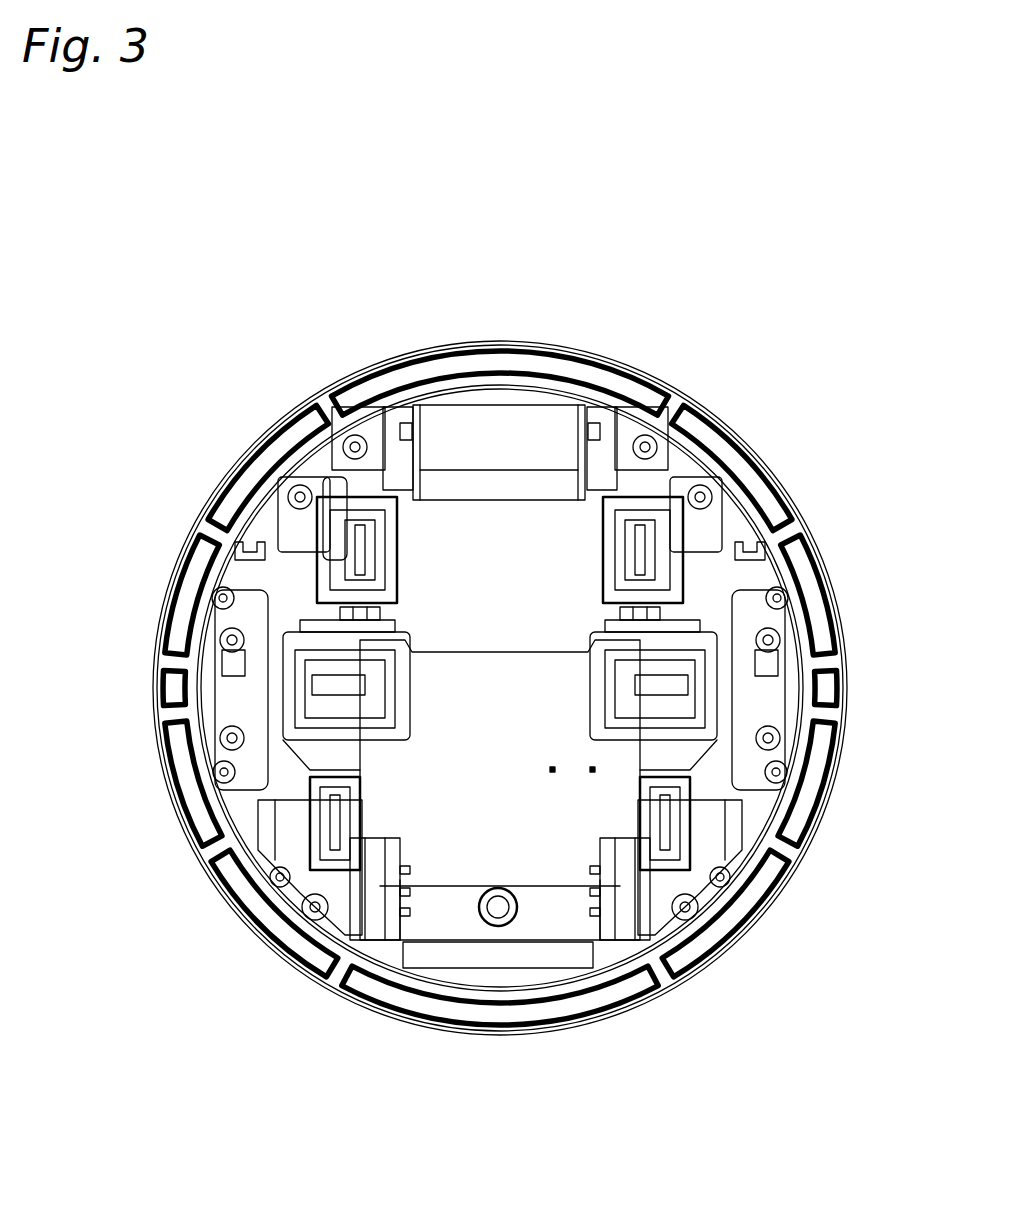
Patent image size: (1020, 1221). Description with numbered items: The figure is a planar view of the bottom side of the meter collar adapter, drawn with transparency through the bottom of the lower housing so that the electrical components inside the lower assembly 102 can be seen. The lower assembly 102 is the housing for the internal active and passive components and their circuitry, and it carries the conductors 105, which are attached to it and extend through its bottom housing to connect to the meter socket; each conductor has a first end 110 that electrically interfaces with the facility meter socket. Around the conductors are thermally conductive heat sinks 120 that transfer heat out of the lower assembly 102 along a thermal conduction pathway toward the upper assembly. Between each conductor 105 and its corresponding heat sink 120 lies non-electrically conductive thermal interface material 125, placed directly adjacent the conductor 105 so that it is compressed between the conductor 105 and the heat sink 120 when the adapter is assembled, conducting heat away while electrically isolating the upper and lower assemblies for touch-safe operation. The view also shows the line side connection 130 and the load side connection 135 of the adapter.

The lower assembly 102 is at (731, 322).
The conductor 105 is at (340, 490).
The first end 110 is at (350, 547).
The heat sink 120 is at (290, 530).
The thermal interface material 125 is at (300, 480).
The line side connection 130 is at (498, 912).
The load side connection 135 is at (497, 468).